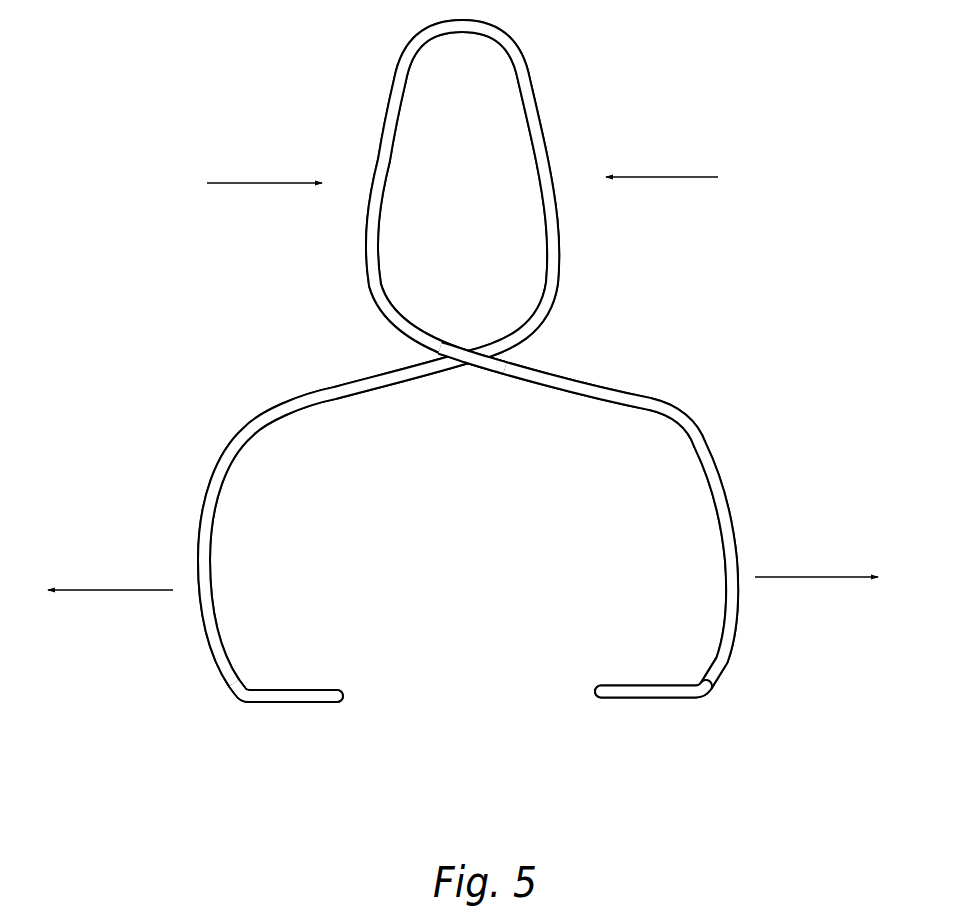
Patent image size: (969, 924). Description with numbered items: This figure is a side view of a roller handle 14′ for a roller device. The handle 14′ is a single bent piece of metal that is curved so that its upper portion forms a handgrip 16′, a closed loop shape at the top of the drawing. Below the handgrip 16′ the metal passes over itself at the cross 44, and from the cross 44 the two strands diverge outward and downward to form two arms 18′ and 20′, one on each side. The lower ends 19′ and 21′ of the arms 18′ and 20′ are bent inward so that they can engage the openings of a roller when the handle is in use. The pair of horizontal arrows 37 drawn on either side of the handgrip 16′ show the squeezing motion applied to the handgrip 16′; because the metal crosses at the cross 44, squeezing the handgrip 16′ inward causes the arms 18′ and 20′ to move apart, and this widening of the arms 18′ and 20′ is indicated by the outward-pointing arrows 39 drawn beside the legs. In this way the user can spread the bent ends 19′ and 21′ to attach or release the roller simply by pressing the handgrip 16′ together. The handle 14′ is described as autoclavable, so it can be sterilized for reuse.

The handle 14′ is at (584, 90).
The handgrip 16′ is at (396, 71).
The arm 18′ is at (238, 437).
The arm 20′ is at (705, 438).
The end of arm 19′ is at (297, 703).
The end of arm 21′ is at (657, 699).
The cross 44 is at (518, 359).
The arrows 37 is at (277, 183).
The arrows 39 is at (113, 591).